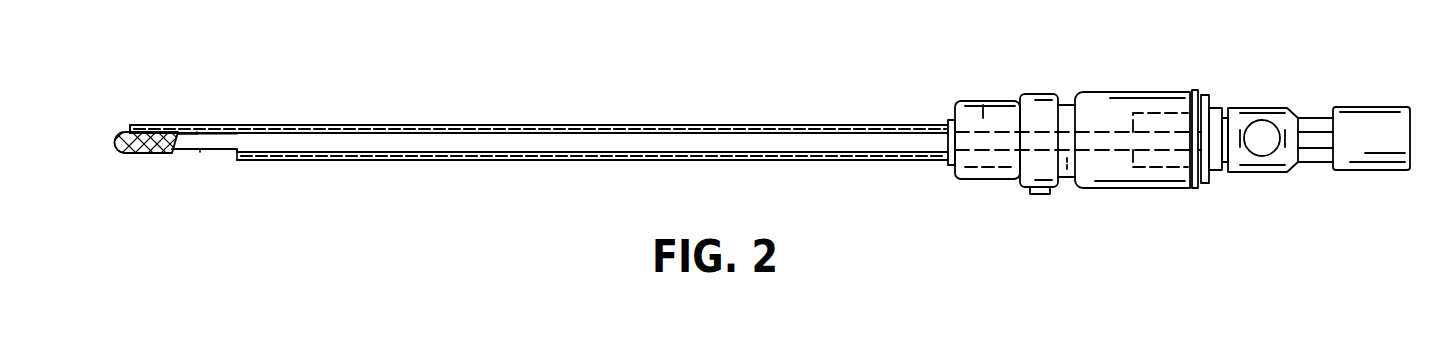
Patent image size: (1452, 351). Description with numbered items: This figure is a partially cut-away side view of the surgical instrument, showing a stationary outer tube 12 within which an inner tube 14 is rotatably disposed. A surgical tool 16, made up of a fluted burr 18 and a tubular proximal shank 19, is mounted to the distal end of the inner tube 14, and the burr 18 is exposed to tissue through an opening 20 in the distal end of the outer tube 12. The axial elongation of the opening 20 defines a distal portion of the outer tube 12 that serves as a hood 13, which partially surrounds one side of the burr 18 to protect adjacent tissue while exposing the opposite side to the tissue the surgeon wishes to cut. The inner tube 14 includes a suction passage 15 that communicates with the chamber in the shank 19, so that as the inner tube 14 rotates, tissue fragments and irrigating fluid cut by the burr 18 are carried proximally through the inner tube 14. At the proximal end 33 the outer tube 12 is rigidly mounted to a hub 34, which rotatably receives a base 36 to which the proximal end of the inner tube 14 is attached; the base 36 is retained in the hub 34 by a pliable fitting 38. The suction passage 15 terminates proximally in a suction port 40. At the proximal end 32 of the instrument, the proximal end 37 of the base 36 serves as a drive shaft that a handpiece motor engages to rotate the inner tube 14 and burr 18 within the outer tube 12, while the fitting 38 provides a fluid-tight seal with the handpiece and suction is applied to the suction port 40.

The outer tube 12 is at (372, 126).
The hood 13 is at (140, 127).
The inner tube 14 is at (589, 133).
The suction passage 15 is at (337, 142).
The surgical tool 16 is at (122, 162).
The fluted burr 18 is at (157, 153).
The proximal shank 19 is at (203, 150).
The opening 20 is at (230, 165).
The proximal end 32 is at (1028, 68).
The proximal end 33 is at (948, 163).
The hub 34 is at (1115, 93).
The base 36 is at (1158, 112).
The proximal end 37 is at (1317, 118).
The pliable fitting 38 is at (1207, 95).
The suction port 40 is at (1260, 137).